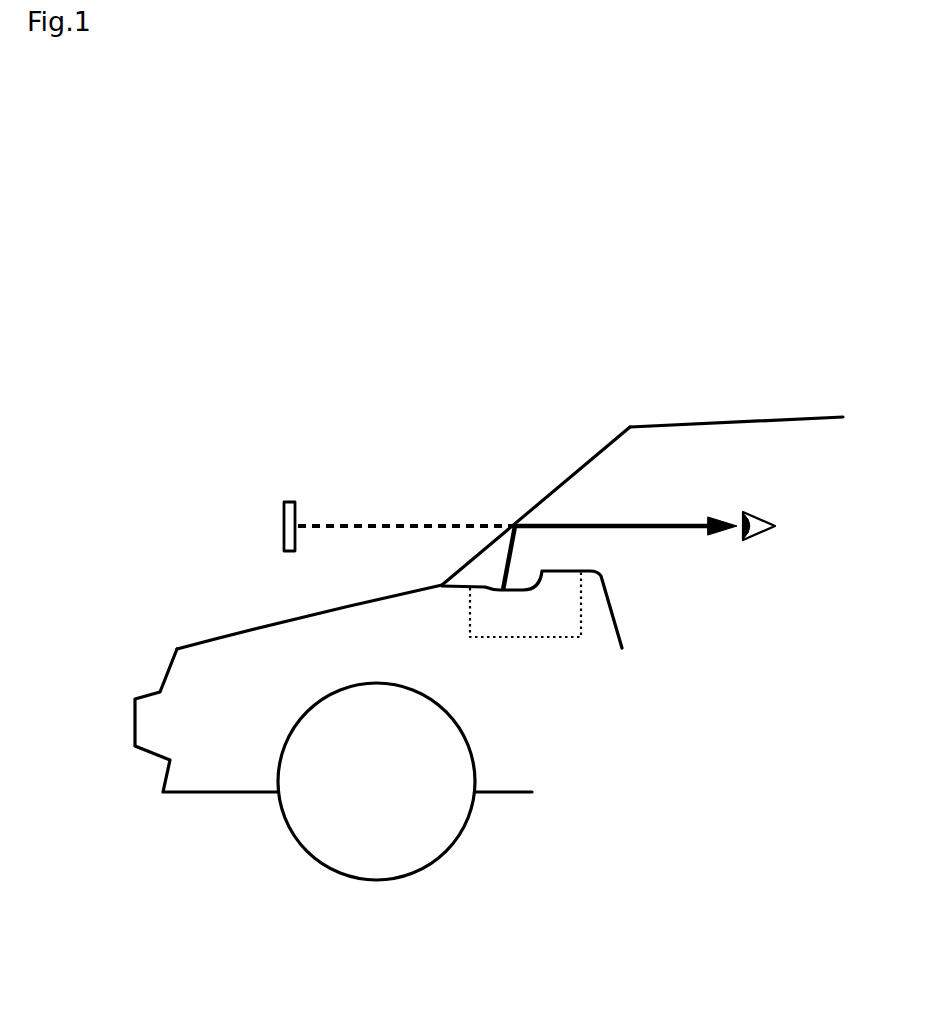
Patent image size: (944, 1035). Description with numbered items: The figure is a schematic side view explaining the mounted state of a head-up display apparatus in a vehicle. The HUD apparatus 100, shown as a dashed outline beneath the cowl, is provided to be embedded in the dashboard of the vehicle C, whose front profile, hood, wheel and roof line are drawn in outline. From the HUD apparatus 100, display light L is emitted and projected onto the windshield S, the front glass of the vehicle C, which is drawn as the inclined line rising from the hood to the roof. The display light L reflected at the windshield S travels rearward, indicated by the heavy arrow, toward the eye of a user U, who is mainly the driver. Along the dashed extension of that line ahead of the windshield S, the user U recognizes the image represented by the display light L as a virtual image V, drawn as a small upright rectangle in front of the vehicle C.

The vehicle C is at (485, 384).
The windshield S is at (597, 455).
The virtual image V is at (284, 516).
The user U is at (775, 510).
The display light L is at (658, 528).
The HUD apparatus 100 is at (540, 615).